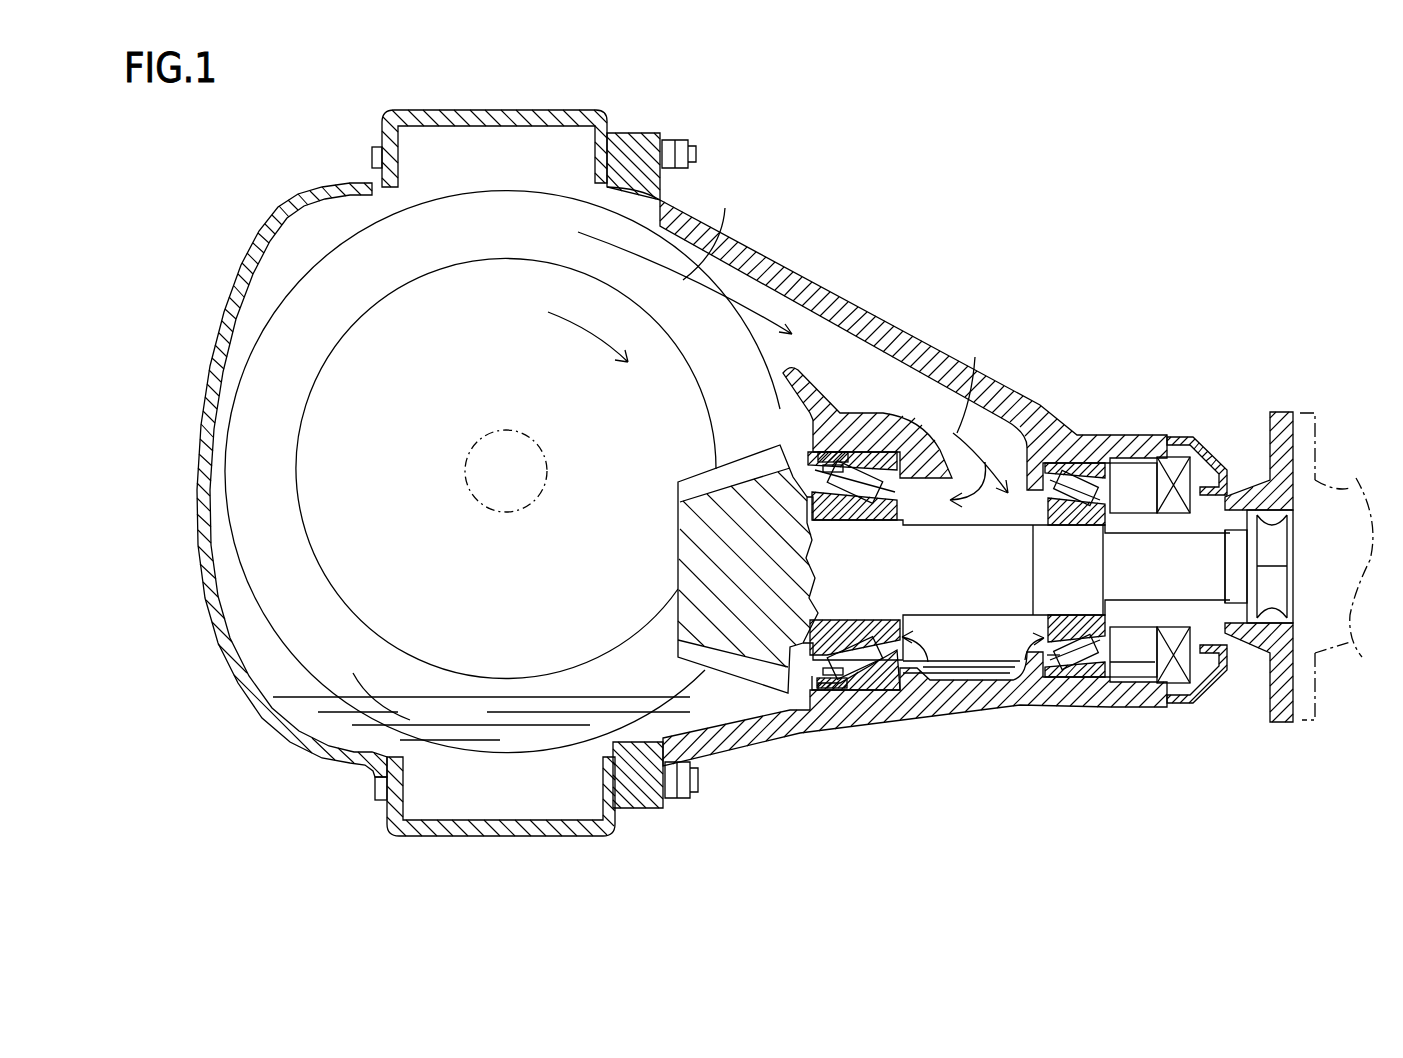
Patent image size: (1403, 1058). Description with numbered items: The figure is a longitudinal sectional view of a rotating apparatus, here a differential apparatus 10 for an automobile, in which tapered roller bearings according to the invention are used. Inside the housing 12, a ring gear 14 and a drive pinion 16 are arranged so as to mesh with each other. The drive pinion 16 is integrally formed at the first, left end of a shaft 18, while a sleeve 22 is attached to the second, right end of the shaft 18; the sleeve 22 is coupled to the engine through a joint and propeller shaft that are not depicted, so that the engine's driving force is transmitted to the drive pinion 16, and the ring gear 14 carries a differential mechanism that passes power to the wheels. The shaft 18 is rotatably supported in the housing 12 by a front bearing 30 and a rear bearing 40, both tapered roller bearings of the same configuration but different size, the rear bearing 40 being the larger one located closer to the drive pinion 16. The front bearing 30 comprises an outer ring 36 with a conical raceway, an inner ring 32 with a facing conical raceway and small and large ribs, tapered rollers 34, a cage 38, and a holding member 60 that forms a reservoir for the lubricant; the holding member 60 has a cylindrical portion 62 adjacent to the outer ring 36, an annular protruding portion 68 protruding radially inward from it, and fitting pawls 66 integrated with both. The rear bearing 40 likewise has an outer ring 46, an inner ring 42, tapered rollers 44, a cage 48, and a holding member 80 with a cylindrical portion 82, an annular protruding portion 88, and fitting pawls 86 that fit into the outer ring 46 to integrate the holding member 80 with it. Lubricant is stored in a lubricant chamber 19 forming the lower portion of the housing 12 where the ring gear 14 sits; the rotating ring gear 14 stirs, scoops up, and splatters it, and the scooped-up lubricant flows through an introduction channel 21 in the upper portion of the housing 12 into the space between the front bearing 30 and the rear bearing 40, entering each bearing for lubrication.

The differential apparatus 10 is at (1064, 216).
The housing 12 is at (694, 225).
The ring gear 14 is at (468, 215).
The drive pinion 16 is at (697, 490).
The shaft 18 is at (973, 595).
The lubricant chamber 19 is at (495, 795).
The introduction channel 21 is at (802, 343).
The sleeve 22 is at (1237, 633).
The front bearing 30 is at (1180, 333).
The inner ring 32 is at (1097, 467).
The tapered rollers 34 is at (1072, 467).
The outer ring 36 is at (1055, 467).
The cage 38 is at (1043, 478).
The rear bearing 40 is at (975, 224).
The inner ring 42 is at (850, 468).
The tapered rollers 44 is at (872, 478).
The outer ring 46 is at (912, 455).
The cage 48 is at (948, 472).
The holding member 60 is at (1100, 460).
The cylindrical portion 62 is at (1100, 673).
The fitting pawls 66 is at (1097, 653).
The annular protruding portion 68 is at (1120, 660).
The holding member 80 is at (826, 455).
The cylindrical portion 82 is at (823, 690).
The fitting pawls 86 is at (845, 690).
The annular protruding portion 88 is at (815, 684).